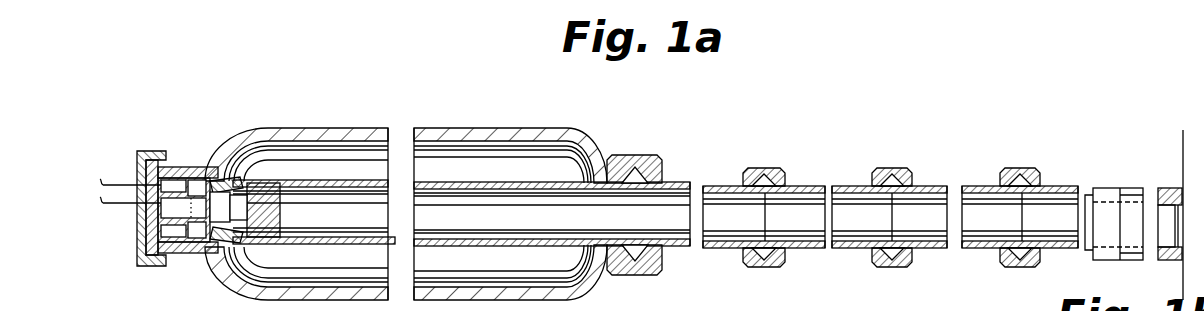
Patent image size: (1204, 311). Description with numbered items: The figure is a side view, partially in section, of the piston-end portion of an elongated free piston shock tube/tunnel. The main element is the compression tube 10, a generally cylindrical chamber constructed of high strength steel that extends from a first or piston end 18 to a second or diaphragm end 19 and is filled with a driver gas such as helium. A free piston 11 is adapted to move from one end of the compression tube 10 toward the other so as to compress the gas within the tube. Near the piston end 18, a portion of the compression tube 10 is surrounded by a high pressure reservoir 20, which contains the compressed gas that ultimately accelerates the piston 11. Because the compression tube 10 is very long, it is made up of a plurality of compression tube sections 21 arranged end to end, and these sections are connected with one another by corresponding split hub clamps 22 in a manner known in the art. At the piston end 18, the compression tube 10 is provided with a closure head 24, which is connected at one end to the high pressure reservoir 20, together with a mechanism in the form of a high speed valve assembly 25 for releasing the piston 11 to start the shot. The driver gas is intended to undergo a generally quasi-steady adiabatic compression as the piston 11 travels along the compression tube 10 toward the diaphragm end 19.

The compression tube 10 is at (531, 170).
The free piston 11 is at (268, 186).
The piston end 18 is at (197, 165).
The diaphragm end 19 is at (1167, 187).
The high pressure reservoir 20 is at (500, 127).
The compression tube sections 21 is at (722, 187).
The split hub clamps 22 is at (636, 155).
The closure head 24 is at (166, 150).
The high speed valve assembly 25 is at (226, 170).